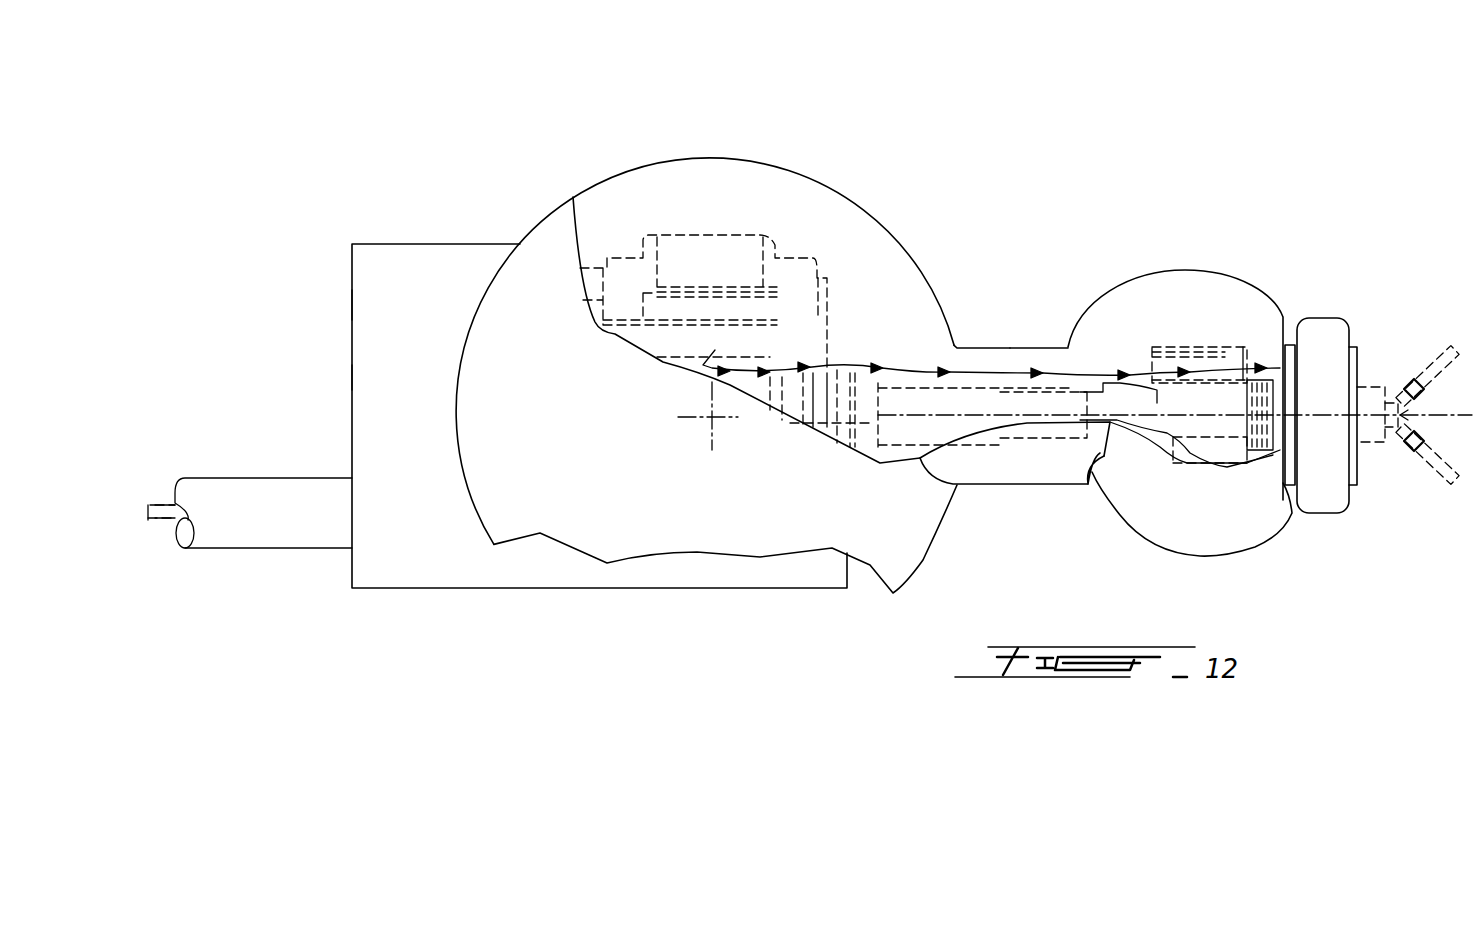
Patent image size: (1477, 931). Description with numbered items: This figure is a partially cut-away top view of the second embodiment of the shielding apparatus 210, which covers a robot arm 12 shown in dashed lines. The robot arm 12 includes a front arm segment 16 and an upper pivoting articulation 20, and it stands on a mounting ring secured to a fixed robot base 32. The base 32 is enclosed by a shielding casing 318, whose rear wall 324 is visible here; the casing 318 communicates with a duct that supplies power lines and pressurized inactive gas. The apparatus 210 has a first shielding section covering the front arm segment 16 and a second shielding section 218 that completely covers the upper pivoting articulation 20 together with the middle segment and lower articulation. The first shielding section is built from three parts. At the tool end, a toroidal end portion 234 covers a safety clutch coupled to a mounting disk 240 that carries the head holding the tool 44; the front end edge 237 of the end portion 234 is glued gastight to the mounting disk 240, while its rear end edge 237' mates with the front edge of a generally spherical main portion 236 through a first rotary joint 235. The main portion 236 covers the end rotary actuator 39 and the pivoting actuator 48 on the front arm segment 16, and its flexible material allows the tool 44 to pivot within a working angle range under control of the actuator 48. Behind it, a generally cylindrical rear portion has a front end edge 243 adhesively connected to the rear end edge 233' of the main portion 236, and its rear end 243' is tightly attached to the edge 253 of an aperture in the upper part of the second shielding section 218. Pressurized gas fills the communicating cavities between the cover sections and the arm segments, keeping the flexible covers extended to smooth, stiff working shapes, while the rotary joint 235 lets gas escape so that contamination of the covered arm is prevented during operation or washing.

The shielding apparatus 210 is at (727, 150).
The robot arm 12 is at (770, 237).
The upper pivoting articulation 20 is at (800, 280).
The fixed robot base 32 is at (412, 270).
The second shielding section 218 is at (530, 317).
The rear wall 324 is at (350, 303).
The shielding casing 318 is at (350, 377).
The edge of aperture 253 is at (957, 345).
The rear end 243' is at (1014, 315).
The front arm segment 16 is at (1013, 395).
The pivoting actuator 48 is at (1167, 348).
The main portion 236 is at (1170, 272).
The end rotary actuator 39 is at (1263, 355).
The rear end edge 237' is at (1266, 347).
The end portion 234 is at (1350, 340).
The front end edge 237 is at (1382, 353).
The mounting disk 240 is at (1365, 350).
The tool 44 is at (1437, 350).
The front end edge 243 is at (1015, 487).
The rear end edge 233' is at (1126, 528).
The first rotary joint 235 is at (1291, 517).